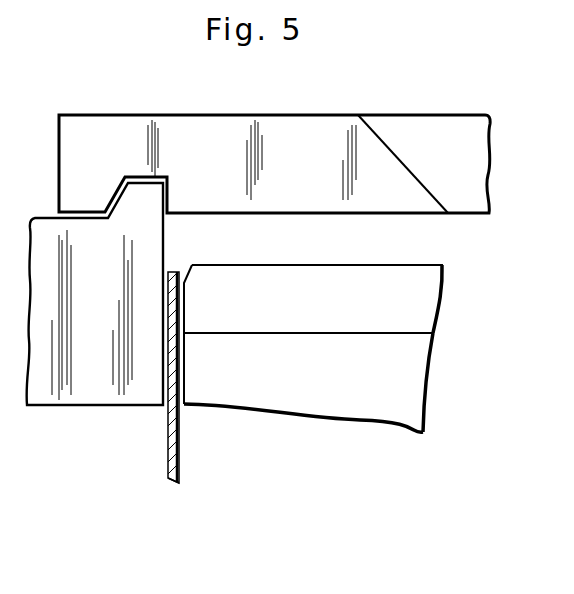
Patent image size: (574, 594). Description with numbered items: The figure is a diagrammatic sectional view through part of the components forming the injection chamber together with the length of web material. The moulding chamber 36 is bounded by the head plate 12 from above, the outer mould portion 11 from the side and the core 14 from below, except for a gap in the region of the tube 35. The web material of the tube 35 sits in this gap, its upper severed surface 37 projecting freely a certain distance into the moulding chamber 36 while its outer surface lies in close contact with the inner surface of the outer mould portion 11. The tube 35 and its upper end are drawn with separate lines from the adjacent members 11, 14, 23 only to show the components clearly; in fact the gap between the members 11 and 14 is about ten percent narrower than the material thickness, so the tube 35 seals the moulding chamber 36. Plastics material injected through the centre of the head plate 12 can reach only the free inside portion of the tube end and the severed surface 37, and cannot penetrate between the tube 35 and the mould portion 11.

The outer mould portion 11 is at (95, 294).
The head plate 12 is at (287, 165).
The core 14 is at (407, 302).
The adjacent member 23 is at (407, 392).
The tube 35 is at (172, 481).
The moulding chamber 36 is at (311, 240).
The upper severed surface 37 is at (176, 272).